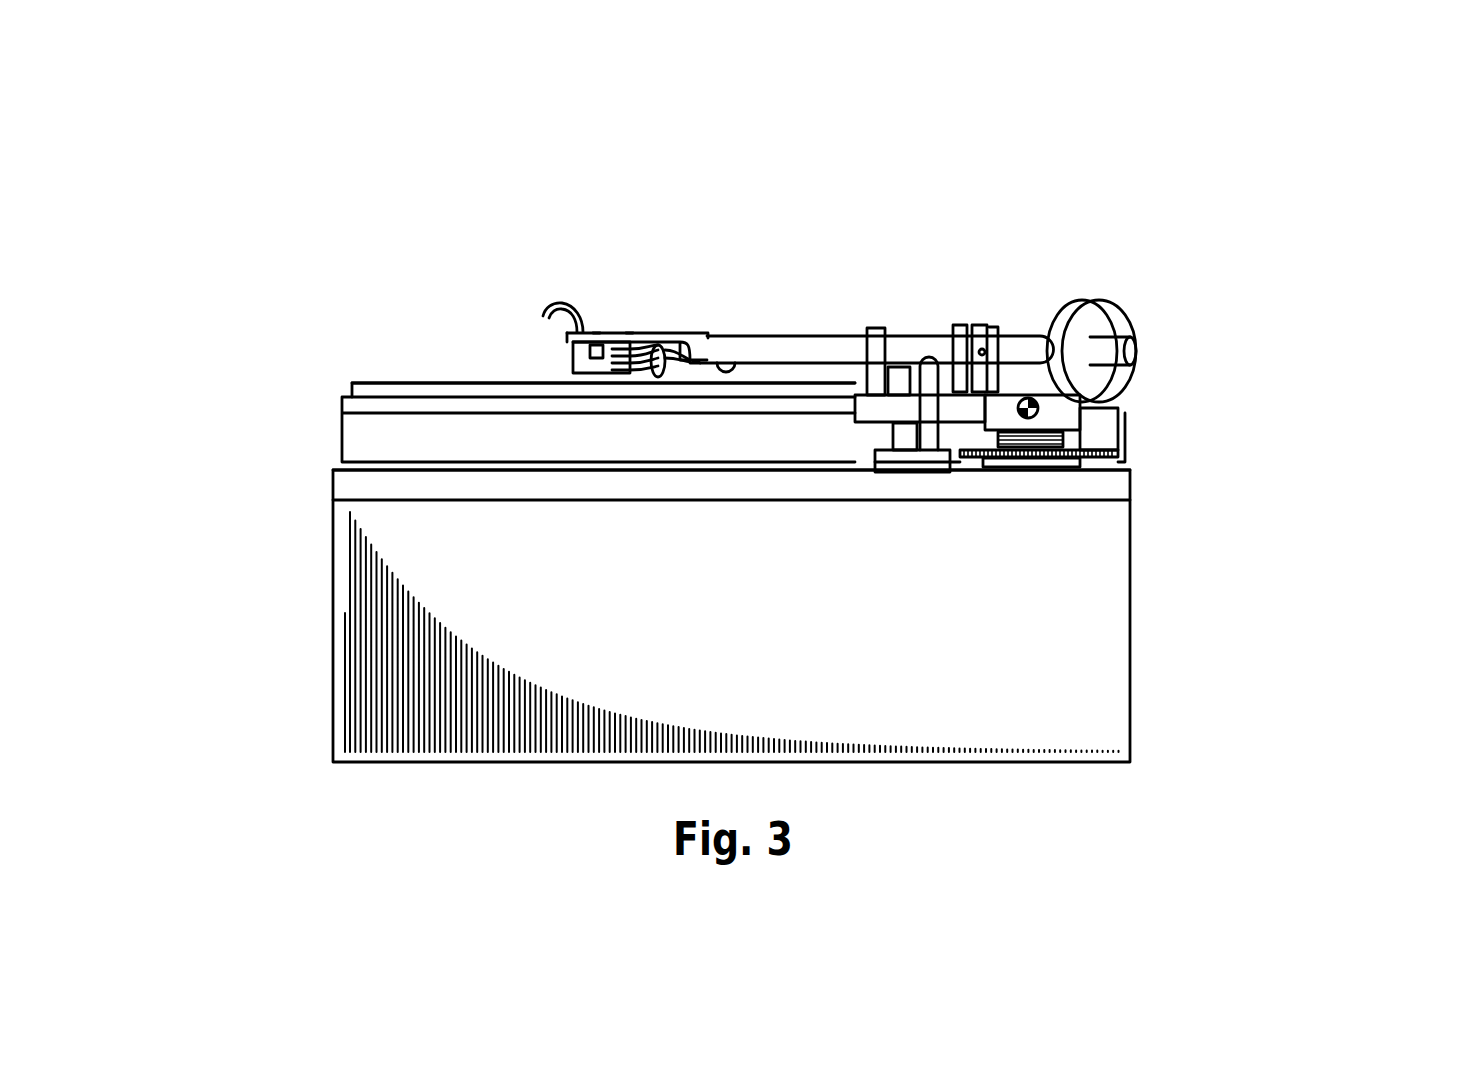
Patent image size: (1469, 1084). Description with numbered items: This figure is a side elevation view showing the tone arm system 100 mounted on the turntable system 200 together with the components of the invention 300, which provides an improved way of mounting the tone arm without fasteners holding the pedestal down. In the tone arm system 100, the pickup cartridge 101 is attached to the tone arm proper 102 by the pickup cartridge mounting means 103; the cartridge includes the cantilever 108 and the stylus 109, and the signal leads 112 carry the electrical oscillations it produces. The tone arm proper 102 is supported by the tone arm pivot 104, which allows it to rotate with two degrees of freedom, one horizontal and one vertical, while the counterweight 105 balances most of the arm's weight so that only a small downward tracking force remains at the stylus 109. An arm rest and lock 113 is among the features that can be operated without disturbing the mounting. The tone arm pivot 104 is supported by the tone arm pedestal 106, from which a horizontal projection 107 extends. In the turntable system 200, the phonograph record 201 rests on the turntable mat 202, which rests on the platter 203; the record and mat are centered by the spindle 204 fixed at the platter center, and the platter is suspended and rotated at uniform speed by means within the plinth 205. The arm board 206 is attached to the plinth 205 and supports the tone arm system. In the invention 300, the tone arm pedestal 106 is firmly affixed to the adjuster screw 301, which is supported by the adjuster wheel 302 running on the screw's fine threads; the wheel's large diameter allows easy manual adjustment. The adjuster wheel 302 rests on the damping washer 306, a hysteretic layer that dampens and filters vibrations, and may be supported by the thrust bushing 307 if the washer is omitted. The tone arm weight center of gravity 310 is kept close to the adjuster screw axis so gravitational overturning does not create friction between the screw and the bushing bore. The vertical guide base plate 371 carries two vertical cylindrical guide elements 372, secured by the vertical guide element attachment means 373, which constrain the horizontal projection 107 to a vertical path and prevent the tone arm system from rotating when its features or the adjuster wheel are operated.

The tone arm system 100 is at (1253, 347).
The pickup cartridge 101 is at (567, 347).
The tone arm proper 102 is at (830, 334).
The pickup cartridge mounting means 103 is at (600, 332).
The tone arm pivot 104 is at (982, 326).
The counterweight 105 is at (1110, 317).
The tone arm pedestal 106 is at (1120, 422).
The horizontal projection 107 is at (853, 422).
The cantilever 108 is at (598, 377).
The stylus 109 is at (595, 375).
The signal leads 112 is at (662, 377).
The arm rest and lock 113 is at (874, 330).
The turntable system 200 is at (313, 620).
The phonograph record 201 is at (477, 388).
The turntable mat 202 is at (350, 408).
The platter 203 is at (342, 440).
The spindle 204 is at (773, 350).
The plinth 205 is at (337, 677).
The arm board 206 is at (332, 487).
The invention 300 is at (1168, 522).
The adjuster screw 301 is at (1080, 437).
The adjuster wheel 302 is at (1127, 458).
The damping washer 306 is at (998, 476).
The thrust bushing 307 is at (1043, 478).
The tone arm weight center of gravity 310 is at (1027, 419).
The vertical guide base plate 371 is at (862, 458).
The vertical guide elements 372 is at (893, 432).
The vertical guide element attachment means 373 is at (928, 354).